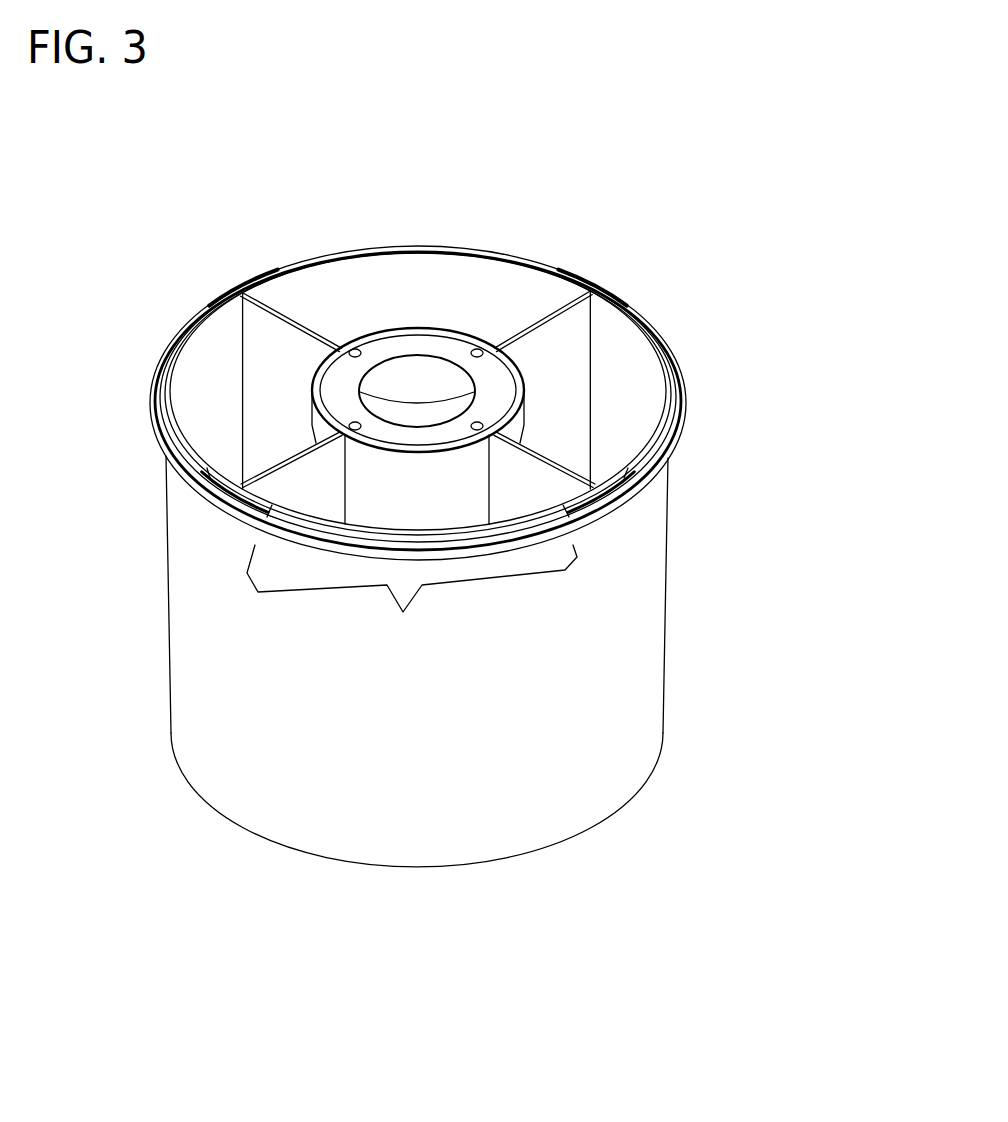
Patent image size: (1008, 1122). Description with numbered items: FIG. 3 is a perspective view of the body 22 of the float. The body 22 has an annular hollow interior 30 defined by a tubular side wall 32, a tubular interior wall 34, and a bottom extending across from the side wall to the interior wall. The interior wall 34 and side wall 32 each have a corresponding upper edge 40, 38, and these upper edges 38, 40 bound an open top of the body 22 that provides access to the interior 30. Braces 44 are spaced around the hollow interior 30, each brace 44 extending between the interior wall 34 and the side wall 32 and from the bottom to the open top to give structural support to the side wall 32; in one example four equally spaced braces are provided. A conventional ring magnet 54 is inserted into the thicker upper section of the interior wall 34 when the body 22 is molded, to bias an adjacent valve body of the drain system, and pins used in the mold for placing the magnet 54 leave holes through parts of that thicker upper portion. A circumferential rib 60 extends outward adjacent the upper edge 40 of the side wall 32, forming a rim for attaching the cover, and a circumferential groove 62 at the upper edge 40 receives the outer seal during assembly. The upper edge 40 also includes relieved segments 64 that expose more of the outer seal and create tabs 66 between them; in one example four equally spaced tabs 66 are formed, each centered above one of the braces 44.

The body 22 is at (474, 661).
The annular hollow interior 30 is at (407, 300).
The tubular side wall 32 is at (664, 678).
The tubular interior wall 34 is at (523, 418).
The upper edge of side wall 38 is at (513, 368).
The upper edge of interior wall 40 is at (657, 392).
The braces 44 is at (291, 381).
The ring magnet 54 is at (403, 377).
The circumferential rib 60 is at (680, 432).
The circumferential groove 62 is at (172, 410).
The relieved segments 64 is at (412, 604).
The tabs 66 is at (212, 311).